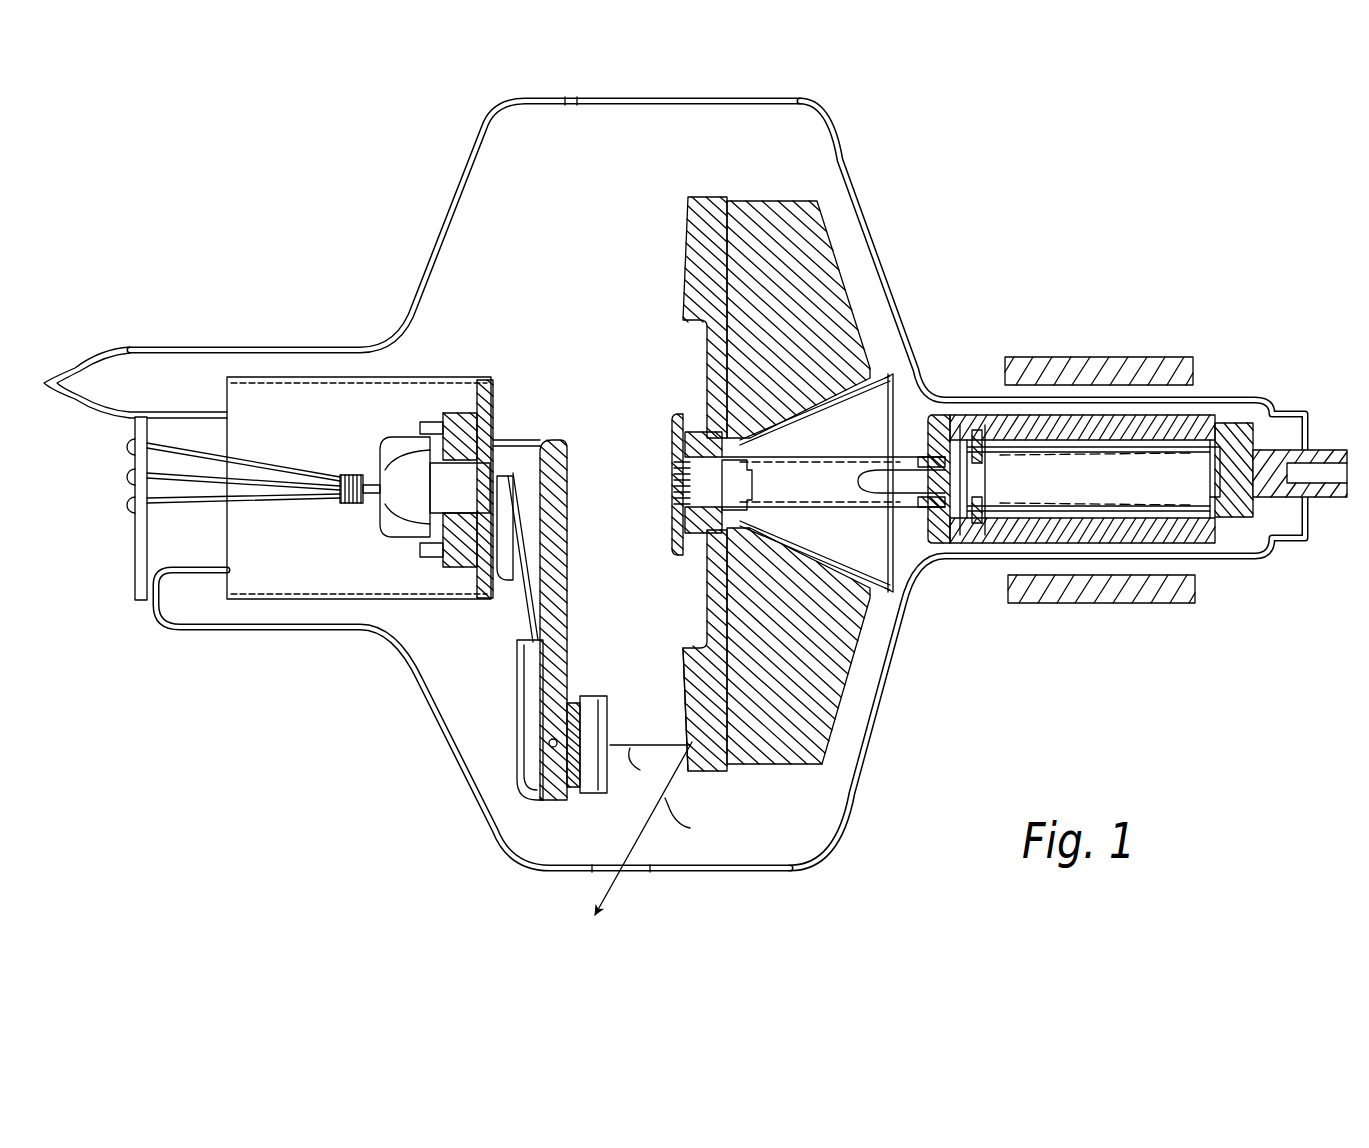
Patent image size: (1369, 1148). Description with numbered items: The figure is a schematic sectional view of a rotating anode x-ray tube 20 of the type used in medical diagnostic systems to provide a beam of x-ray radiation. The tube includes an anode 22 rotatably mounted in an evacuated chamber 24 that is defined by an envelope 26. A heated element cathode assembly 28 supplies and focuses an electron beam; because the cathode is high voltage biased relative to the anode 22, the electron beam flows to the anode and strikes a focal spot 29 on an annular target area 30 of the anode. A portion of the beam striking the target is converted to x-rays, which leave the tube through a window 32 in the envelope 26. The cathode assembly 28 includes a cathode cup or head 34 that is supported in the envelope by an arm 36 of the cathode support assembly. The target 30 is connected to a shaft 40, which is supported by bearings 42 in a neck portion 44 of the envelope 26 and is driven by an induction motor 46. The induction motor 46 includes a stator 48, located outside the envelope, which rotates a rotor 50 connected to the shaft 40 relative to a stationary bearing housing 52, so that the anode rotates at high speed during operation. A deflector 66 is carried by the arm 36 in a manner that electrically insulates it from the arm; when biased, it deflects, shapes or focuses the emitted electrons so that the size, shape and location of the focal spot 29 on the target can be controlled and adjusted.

The rotating anode x-ray tube 20 is at (695, 513).
The anode 22 is at (742, 498).
The evacuated chamber 24 is at (330, 248).
The envelope 26 is at (856, 172).
The cathode assembly 28 is at (592, 514).
The focal spot 29 is at (684, 732).
The annular target area 30 is at (685, 242).
The window 32 is at (632, 872).
The cathode cup 34 is at (535, 775).
The arm 36 is at (568, 452).
The shaft 40 is at (812, 452).
The bearings 42 is at (988, 520).
The neck portion 44 is at (1222, 558).
The induction motor 46 is at (1137, 435).
The stator 48 is at (1060, 358).
The rotor 50 is at (1105, 540).
The stationary bearing housing 52 is at (1232, 440).
The deflector 66 is at (591, 793).